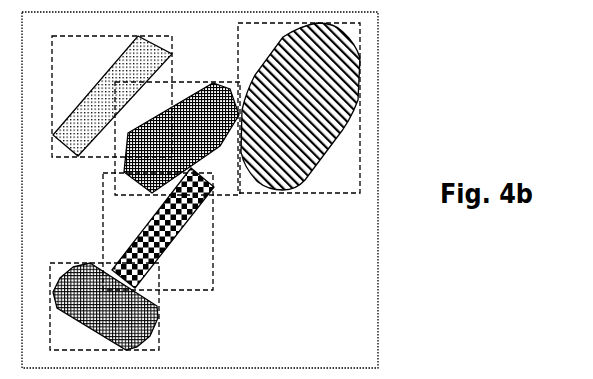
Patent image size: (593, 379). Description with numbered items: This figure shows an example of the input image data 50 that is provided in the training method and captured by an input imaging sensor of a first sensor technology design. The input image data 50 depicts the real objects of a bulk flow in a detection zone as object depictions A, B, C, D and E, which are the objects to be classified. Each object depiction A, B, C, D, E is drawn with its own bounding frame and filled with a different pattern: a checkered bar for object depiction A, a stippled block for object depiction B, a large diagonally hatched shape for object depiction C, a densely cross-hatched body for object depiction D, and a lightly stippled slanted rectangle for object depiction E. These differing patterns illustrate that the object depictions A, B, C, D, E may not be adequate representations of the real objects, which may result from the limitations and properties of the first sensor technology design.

The input image data 50 is at (345, 350).
The object depiction E is at (172, 55).
The object depiction D is at (125, 169).
The object depiction C is at (291, 192).
The object depiction A is at (214, 230).
The object depiction B is at (158, 324).